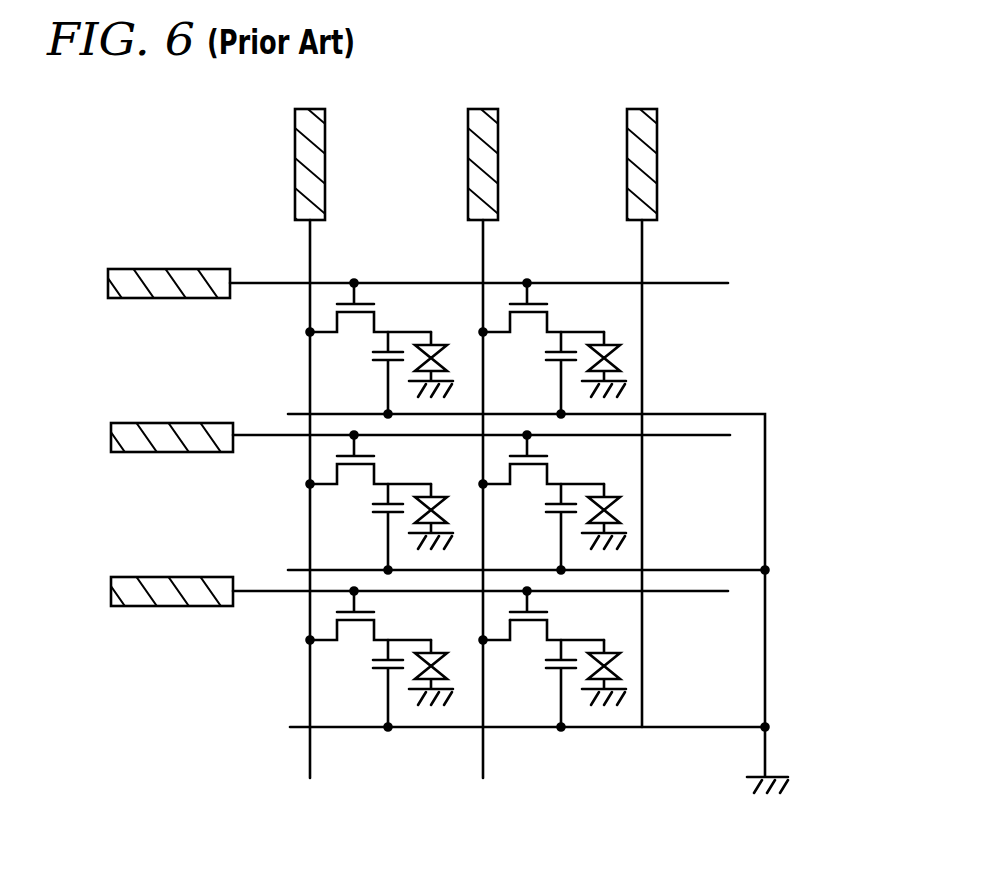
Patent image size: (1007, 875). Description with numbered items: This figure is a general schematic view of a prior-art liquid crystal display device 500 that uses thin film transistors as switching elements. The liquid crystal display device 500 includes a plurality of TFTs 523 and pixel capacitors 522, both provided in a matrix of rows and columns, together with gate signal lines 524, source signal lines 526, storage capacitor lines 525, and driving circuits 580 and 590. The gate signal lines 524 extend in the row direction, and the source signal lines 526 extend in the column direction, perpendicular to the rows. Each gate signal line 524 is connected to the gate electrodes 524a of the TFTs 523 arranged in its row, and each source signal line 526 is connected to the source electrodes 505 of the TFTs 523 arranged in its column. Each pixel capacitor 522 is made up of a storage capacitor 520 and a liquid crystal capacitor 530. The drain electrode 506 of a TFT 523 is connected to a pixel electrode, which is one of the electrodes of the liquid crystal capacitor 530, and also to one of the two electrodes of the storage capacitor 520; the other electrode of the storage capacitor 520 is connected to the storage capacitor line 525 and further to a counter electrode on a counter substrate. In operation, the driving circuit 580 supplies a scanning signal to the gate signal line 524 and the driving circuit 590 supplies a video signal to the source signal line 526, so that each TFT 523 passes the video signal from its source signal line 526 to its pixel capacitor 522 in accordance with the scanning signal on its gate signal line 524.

The liquid crystal display device 500 is at (888, 153).
The source electrode 505 is at (508, 663).
The drain electrode 506 is at (561, 633).
The storage capacitor 520 is at (554, 690).
The pixel capacitor 522 is at (626, 513).
The TFT 523 is at (552, 297).
The gate signal line 524 is at (713, 280).
The gate electrode 524a is at (548, 607).
The storage capacitor line 525 is at (727, 412).
The source signal line 526 is at (482, 247).
The liquid crystal capacitor 530 is at (637, 664).
The driving circuit 580 is at (147, 270).
The driving circuit 590 is at (302, 170).